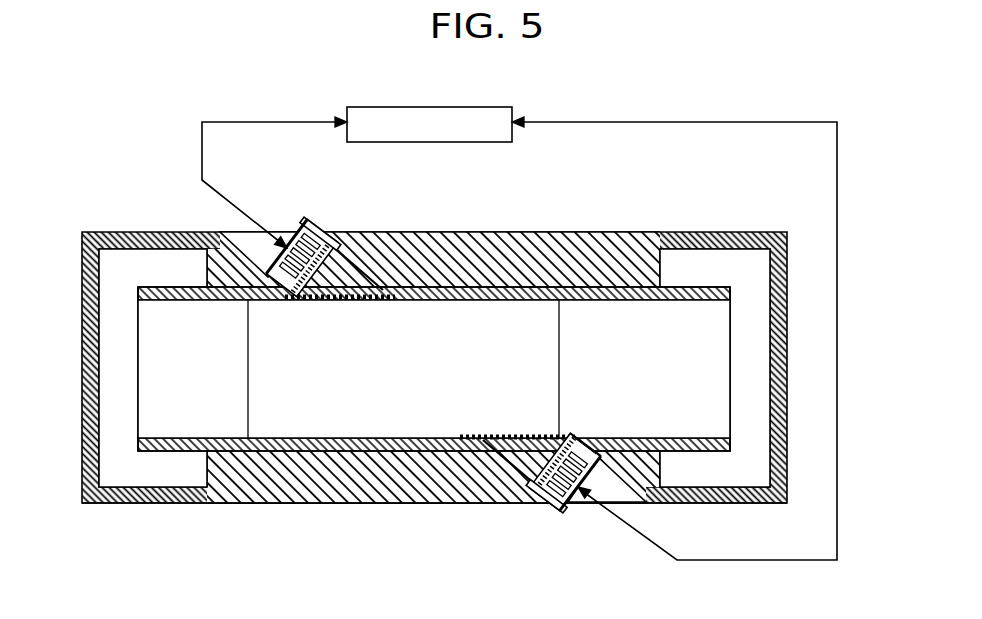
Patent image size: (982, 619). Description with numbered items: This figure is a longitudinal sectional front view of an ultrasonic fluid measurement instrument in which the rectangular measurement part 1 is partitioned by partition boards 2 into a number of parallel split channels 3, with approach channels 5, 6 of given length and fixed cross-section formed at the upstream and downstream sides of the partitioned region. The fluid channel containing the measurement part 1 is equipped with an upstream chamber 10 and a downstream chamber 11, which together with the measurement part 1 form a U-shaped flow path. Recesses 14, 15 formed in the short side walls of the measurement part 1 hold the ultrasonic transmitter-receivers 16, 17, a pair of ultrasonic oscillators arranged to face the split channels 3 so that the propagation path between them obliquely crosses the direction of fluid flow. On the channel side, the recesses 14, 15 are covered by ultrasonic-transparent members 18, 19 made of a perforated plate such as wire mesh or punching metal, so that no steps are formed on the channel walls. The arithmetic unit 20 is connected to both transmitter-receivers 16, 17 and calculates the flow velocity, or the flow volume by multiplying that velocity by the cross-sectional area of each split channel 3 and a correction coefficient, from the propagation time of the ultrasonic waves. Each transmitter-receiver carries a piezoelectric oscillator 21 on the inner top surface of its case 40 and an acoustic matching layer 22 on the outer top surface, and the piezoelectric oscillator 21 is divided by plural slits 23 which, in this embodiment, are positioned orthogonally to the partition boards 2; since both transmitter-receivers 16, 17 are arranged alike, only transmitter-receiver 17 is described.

The measurement part 1 is at (538, 246).
The partition board 2 is at (248, 410).
The split channel 3 is at (296, 415).
The approach channel 5 is at (190, 420).
The approach channel 6 is at (712, 372).
The upstream chamber 10 is at (107, 423).
The downstream chamber 11 is at (753, 318).
The recess 14 is at (347, 283).
The recess 15 is at (517, 453).
The ultrasonic transmitter-receiver 16 is at (320, 232).
The ultrasonic transmitter-receiver 17 is at (561, 510).
The ultrasonic-transparent member 18 is at (392, 295).
The ultrasonic-transparent member 19 is at (453, 505).
The arithmetic unit 20 is at (472, 106).
The piezoelectric oscillator 21 is at (605, 435).
The acoustic matching layer 22 is at (535, 437).
The slit 23 is at (548, 495).
The case 40 is at (582, 430).